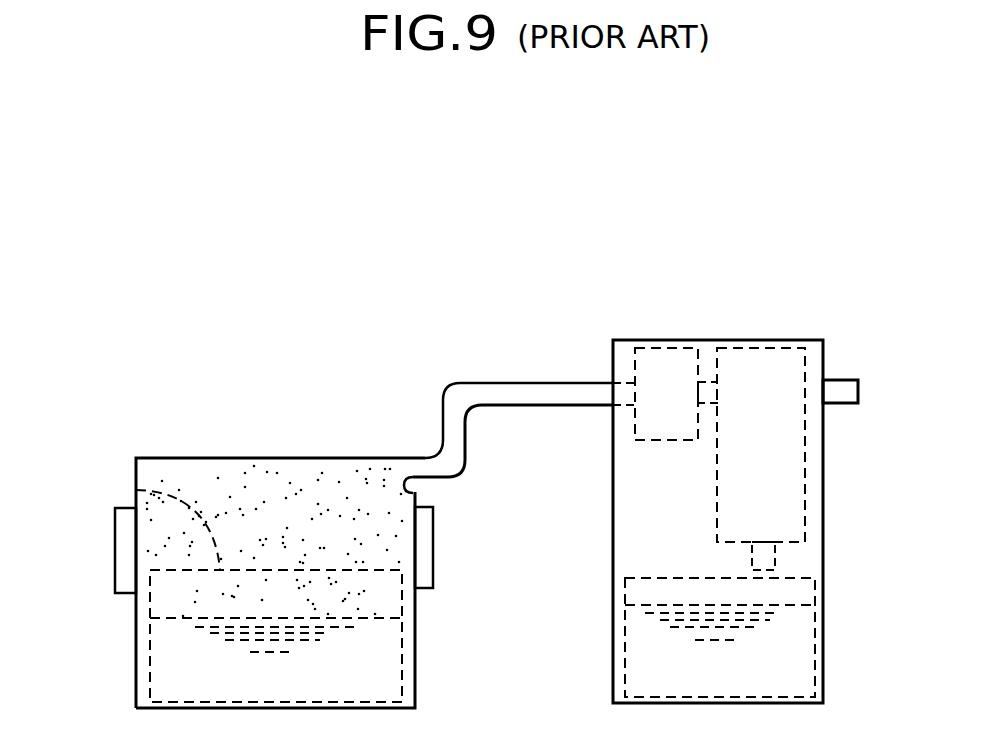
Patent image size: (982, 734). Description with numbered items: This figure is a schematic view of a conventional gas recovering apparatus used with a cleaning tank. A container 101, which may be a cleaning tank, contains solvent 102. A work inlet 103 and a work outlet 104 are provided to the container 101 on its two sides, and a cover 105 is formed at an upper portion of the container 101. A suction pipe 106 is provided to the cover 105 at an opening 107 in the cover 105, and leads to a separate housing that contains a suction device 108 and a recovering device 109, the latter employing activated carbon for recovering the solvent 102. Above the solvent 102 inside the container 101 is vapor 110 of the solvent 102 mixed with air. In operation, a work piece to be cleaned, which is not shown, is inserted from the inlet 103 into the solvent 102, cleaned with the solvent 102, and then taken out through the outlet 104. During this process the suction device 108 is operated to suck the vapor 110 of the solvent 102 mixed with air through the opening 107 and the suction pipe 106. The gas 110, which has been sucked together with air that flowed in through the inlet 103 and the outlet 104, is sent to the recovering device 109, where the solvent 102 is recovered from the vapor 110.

The container 101 is at (135, 490).
The solvent 102 is at (170, 662).
The work inlet 103 is at (122, 538).
The work outlet 104 is at (422, 555).
The cover 105 is at (302, 458).
The suction pipe 106 is at (505, 388).
The opening 107 is at (413, 493).
The suction device 108 is at (668, 340).
The recovering device 109 is at (738, 340).
The vapor 110 is at (257, 520).